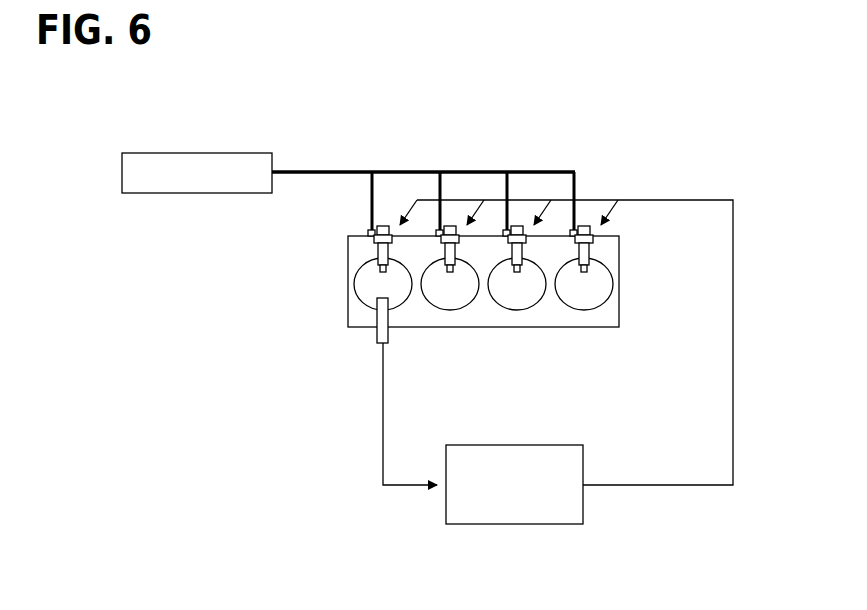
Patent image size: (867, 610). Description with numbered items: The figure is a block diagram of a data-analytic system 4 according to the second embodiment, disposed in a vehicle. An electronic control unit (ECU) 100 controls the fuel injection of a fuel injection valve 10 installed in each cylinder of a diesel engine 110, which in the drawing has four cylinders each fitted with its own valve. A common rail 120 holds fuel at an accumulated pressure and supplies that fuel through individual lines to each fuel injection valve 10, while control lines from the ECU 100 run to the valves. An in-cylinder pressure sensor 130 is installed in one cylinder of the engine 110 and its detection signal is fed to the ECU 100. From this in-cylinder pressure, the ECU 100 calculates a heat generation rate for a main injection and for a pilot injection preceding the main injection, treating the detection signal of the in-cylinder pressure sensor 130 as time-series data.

The data-analytic system 4 is at (472, 106).
The fuel injection valve 10 is at (377, 250).
The electronic control unit 100 is at (523, 524).
The diesel engine 110 is at (348, 316).
The common rail 120 is at (273, 162).
The in-cylinder pressure sensor 130 is at (373, 330).